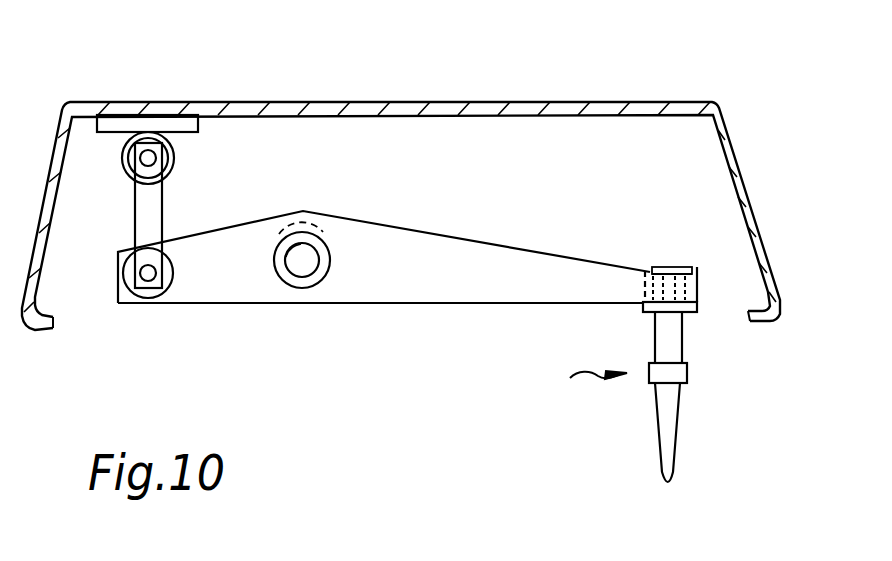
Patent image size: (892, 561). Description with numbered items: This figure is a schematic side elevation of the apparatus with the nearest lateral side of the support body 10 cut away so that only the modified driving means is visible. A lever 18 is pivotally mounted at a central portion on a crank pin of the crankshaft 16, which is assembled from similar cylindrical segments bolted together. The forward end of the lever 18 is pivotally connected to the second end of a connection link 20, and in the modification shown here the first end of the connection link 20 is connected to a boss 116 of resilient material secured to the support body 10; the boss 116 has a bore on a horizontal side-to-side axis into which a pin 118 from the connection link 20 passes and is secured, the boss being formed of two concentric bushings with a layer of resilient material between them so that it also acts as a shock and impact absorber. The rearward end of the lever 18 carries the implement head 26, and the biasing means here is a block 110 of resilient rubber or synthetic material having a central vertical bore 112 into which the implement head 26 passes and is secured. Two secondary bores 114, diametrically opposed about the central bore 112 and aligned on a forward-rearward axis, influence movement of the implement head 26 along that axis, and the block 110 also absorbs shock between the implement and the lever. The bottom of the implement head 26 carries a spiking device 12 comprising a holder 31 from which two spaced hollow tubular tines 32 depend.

The support body 10 is at (455, 100).
The spiking device 12 is at (584, 382).
The crankshaft 16 is at (291, 269).
The lever 18 is at (470, 252).
The connection link 20 is at (163, 189).
The implement head 26 is at (683, 327).
The holder 31 is at (688, 373).
The tines 32 is at (682, 425).
The block of resilient material 110 is at (698, 254).
The central vertical bore 112 is at (671, 266).
The secondary bores 114 is at (652, 264).
The boss of resilient material 116 is at (142, 141).
The pin 118 is at (137, 162).